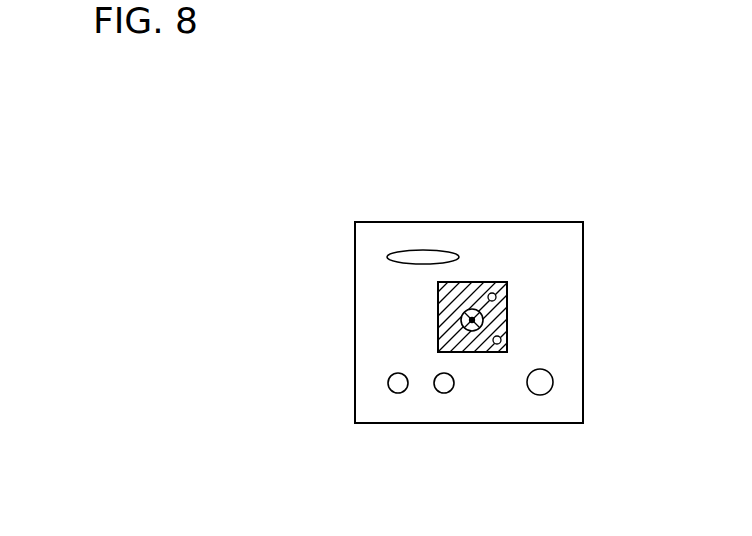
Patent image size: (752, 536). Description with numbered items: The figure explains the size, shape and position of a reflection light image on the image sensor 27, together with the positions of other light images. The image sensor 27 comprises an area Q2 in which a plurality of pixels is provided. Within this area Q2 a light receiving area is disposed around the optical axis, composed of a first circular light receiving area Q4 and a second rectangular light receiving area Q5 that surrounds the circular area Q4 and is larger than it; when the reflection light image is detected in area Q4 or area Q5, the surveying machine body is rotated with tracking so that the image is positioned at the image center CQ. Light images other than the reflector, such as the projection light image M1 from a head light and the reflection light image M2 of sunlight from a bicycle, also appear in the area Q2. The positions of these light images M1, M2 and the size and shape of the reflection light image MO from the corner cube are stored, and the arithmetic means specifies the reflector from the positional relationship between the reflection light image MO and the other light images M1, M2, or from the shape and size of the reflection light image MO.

The image sensor 27 is at (563, 232).
The area Q2 is at (368, 280).
The first circular light receiving area Q4 is at (463, 326).
The second rectangular light receiving area Q5 is at (491, 282).
The image center CQ is at (483, 312).
The reflection light image MO is at (553, 380).
The projection light image M1 is at (440, 399).
The reflection light image of sunlight M2 is at (420, 238).